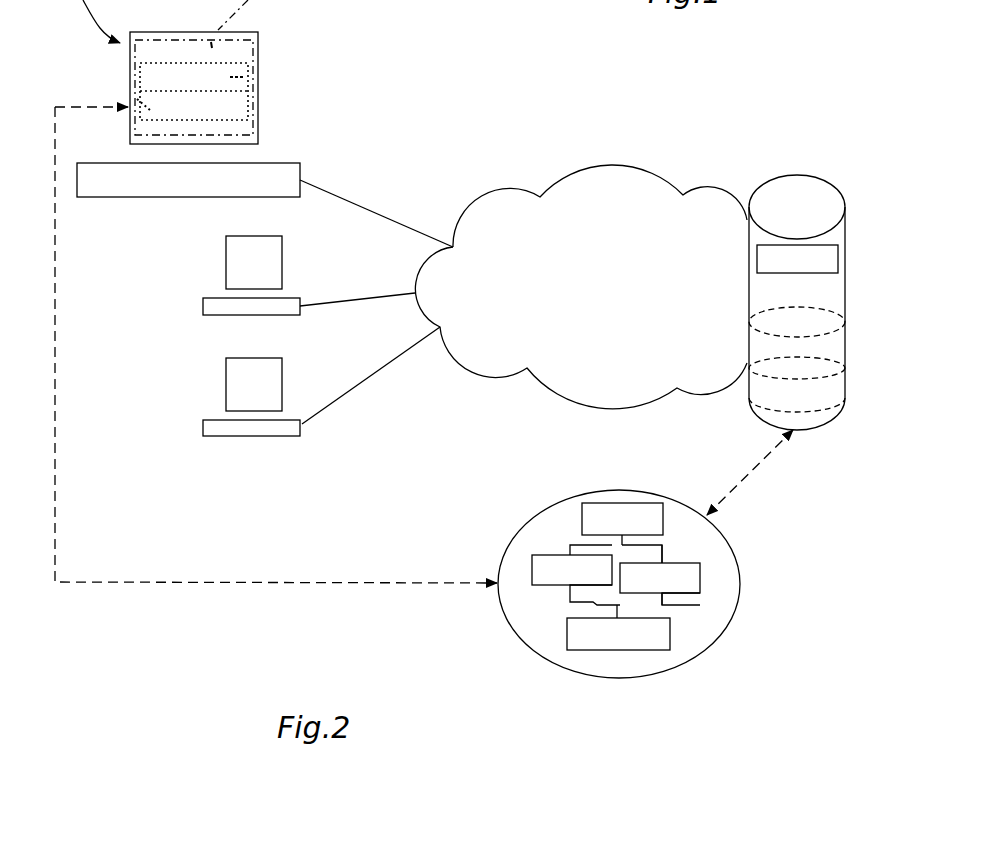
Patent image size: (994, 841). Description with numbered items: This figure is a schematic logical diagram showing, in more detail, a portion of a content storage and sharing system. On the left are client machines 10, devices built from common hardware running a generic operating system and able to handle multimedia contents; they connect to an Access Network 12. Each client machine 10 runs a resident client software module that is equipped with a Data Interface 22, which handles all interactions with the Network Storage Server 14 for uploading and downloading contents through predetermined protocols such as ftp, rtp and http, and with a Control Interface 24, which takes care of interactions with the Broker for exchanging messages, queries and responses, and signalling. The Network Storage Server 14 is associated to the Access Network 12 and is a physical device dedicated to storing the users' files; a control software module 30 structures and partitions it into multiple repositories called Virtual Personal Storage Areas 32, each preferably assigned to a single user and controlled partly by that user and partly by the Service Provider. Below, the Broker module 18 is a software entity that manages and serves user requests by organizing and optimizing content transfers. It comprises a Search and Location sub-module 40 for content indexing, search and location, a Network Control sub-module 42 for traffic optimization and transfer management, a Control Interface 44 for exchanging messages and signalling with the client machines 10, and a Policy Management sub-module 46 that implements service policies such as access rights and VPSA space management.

The client machine 10 is at (218, 265).
The Access Network 12 is at (607, 173).
The Network Storage Server 14 is at (830, 261).
The Broker module 18 is at (628, 582).
The Data Interface 22 is at (260, 72).
The Control Interface 24 is at (128, 100).
The control software module 30 is at (833, 258).
The Virtual Personal Storage Area 32 is at (833, 340).
The Search and Location sub-module 40 is at (627, 513).
The Network Control sub-module 42 is at (683, 573).
The Control Interface 44 is at (557, 557).
The Policy Management sub-module 46 is at (592, 642).